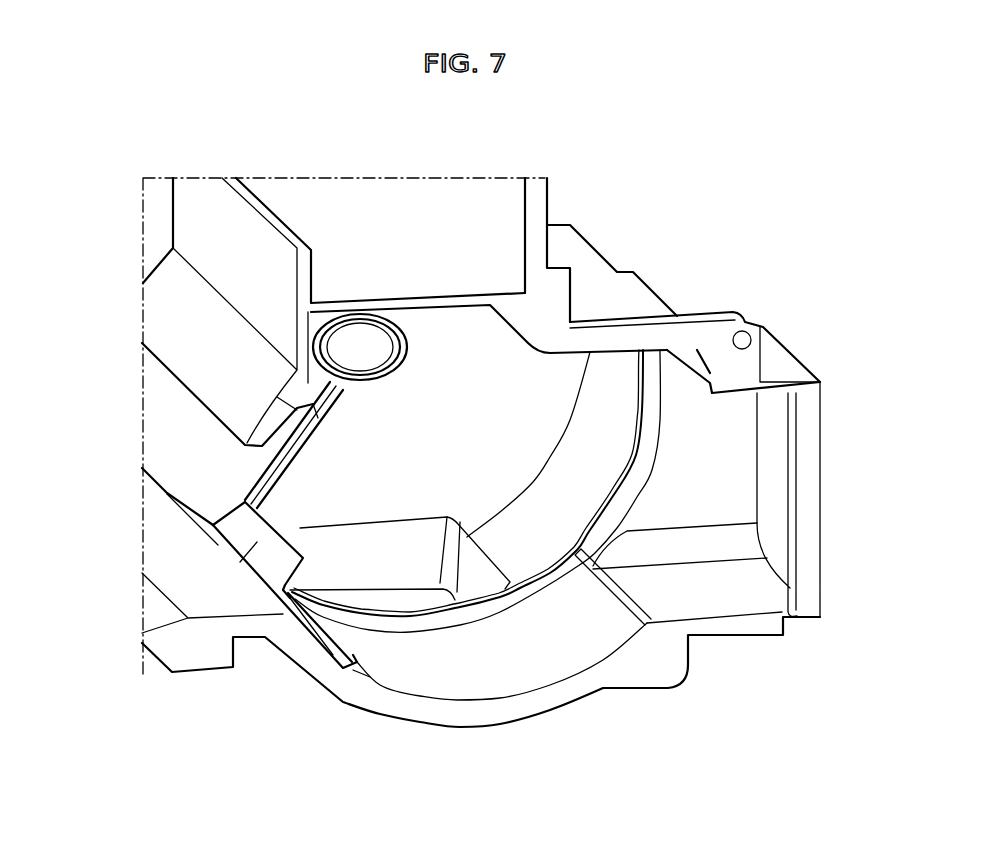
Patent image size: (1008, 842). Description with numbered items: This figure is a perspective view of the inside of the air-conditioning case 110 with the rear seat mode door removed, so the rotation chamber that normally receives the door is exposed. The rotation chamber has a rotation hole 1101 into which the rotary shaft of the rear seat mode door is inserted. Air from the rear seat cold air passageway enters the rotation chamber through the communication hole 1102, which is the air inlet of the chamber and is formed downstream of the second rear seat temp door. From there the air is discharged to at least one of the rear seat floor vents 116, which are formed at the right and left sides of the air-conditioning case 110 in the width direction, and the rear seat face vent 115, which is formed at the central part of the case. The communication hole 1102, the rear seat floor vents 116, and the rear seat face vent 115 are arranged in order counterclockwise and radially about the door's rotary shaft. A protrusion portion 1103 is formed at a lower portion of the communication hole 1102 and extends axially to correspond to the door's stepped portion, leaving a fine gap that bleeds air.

The air-conditioning case 110 is at (545, 210).
The rotation hole 1101 is at (370, 350).
The communication hole 1102 is at (198, 456).
The protrusion portion 1103 is at (257, 542).
The rear seat face vent 115 is at (778, 494).
The rear seat floor vent 116 is at (420, 600).